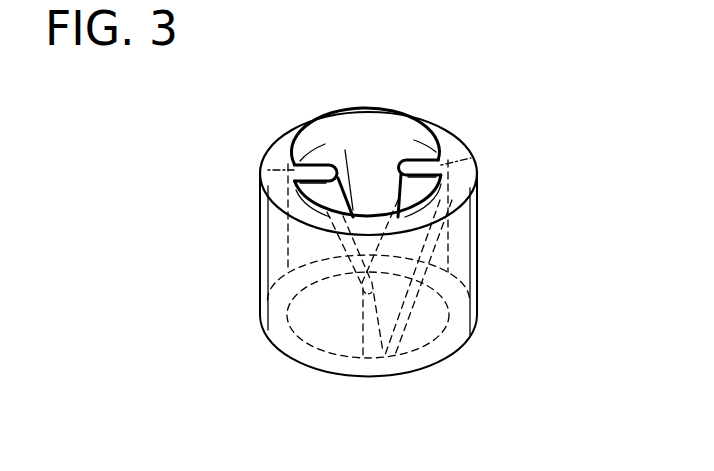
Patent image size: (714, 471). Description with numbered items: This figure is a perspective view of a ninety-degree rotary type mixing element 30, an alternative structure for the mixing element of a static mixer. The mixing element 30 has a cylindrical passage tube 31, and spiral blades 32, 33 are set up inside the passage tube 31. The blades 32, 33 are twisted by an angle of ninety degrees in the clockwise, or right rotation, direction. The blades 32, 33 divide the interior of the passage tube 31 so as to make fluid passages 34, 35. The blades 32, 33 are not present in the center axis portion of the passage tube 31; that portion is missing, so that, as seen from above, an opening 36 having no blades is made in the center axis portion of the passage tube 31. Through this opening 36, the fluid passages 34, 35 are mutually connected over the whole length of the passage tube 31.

The mixing element 30 is at (487, 229).
The cylindrical passage tube 31 is at (472, 273).
The spiral blade 32 is at (330, 163).
The spiral blade 33 is at (441, 147).
The fluid passage 34 is at (332, 207).
The fluid passage 35 is at (412, 150).
The opening 36 is at (370, 158).